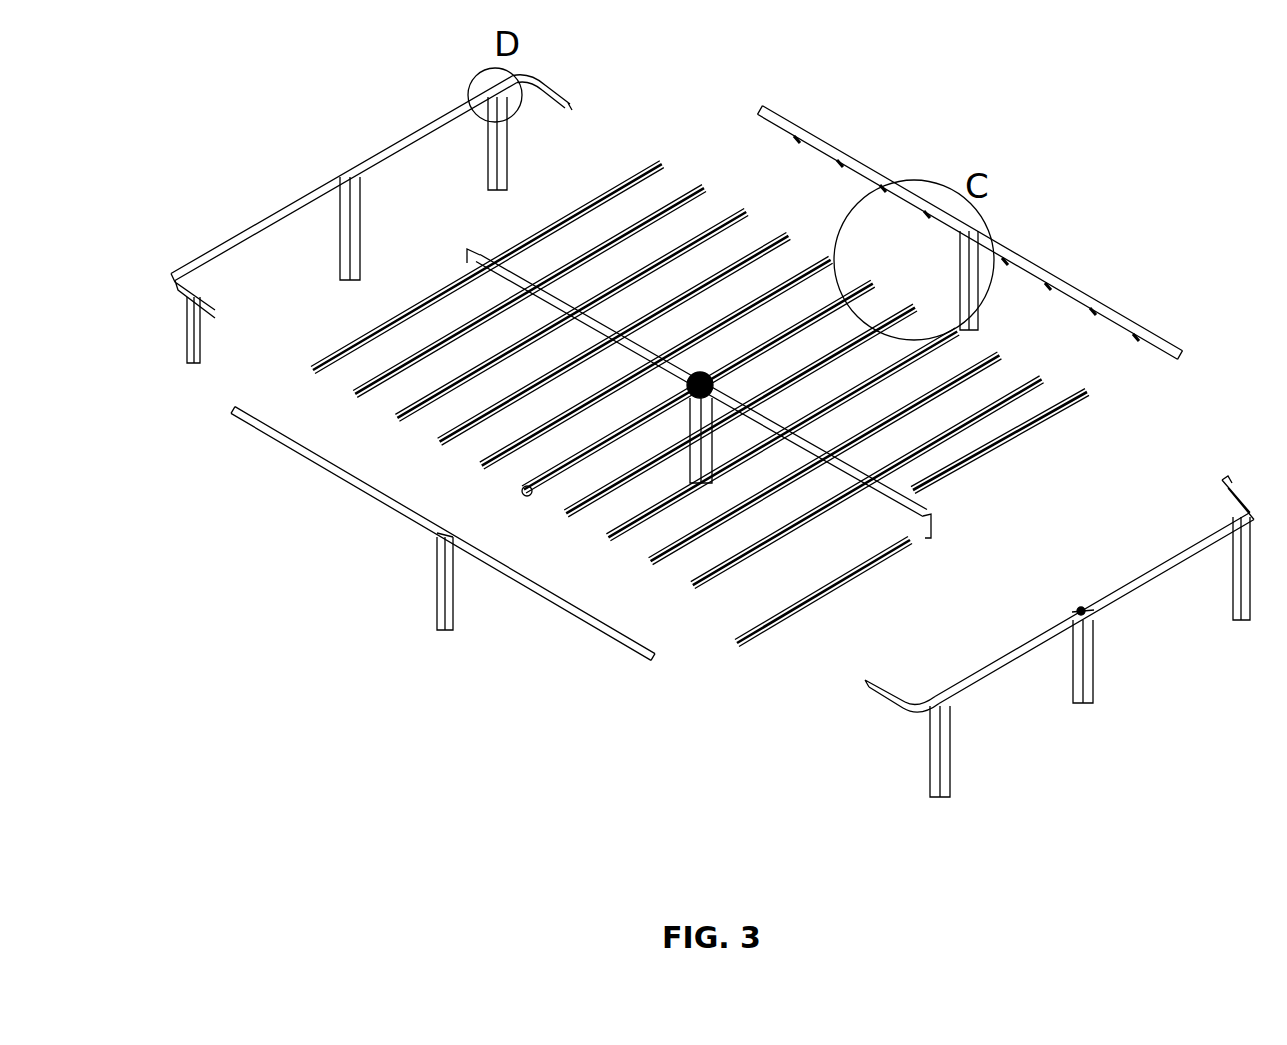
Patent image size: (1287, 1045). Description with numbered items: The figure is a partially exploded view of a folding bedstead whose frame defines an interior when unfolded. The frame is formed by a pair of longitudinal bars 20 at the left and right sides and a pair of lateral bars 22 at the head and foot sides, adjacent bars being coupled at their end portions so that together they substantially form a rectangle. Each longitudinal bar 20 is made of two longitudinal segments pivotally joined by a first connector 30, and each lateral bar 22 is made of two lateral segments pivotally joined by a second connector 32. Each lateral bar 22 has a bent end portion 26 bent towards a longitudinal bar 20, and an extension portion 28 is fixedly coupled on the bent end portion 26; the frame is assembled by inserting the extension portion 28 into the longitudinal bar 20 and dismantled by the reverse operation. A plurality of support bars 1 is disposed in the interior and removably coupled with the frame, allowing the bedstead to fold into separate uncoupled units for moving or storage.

The support bar 1 is at (842, 590).
The longitudinal bar 20 is at (358, 490).
The lateral bar 22 is at (1030, 652).
The bent end portion 26 is at (892, 708).
The extension portion 28 is at (868, 692).
The first connector 30 is at (437, 542).
The second connector 32 is at (1097, 617).